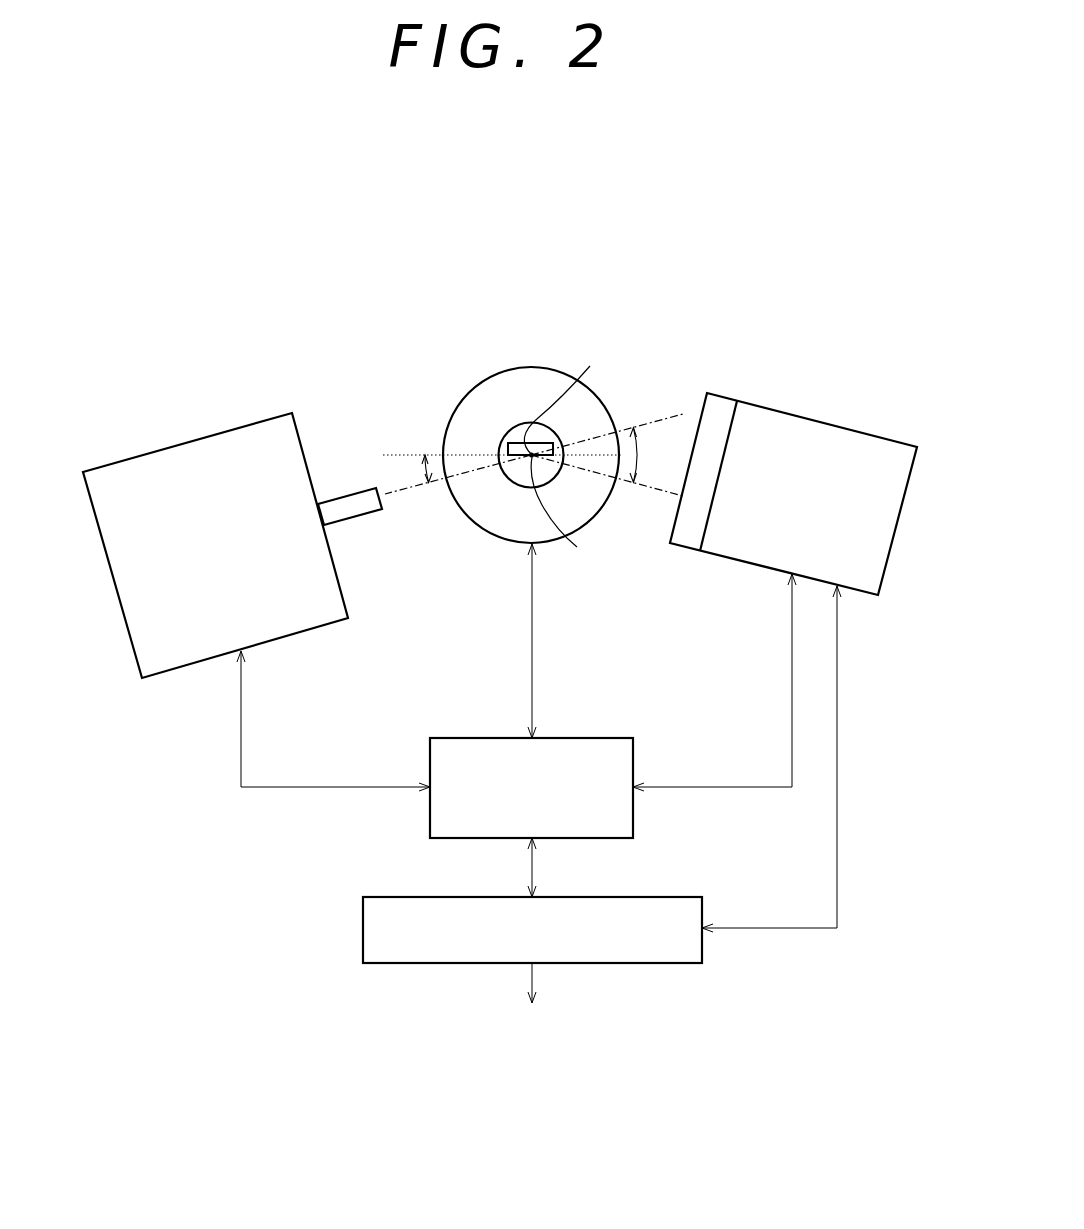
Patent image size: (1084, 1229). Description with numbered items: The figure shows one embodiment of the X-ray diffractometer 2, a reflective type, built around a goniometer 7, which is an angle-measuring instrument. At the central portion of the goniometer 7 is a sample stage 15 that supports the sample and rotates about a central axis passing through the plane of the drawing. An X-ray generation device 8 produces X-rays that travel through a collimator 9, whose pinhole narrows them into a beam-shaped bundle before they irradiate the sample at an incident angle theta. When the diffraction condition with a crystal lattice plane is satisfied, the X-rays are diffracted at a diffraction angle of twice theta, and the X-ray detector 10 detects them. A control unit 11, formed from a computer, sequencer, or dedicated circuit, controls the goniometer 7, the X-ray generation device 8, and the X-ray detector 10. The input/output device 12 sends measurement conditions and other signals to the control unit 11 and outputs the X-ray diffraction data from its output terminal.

The X-ray diffractometer 2 is at (382, 308).
The goniometer 7 is at (535, 367).
The X-ray generation device 8 is at (195, 437).
The collimator 9 is at (351, 488).
The X-ray detector 10 is at (829, 420).
The control unit 11 is at (598, 738).
The input/output device 12 is at (363, 930).
The sample stage 15 is at (512, 484).